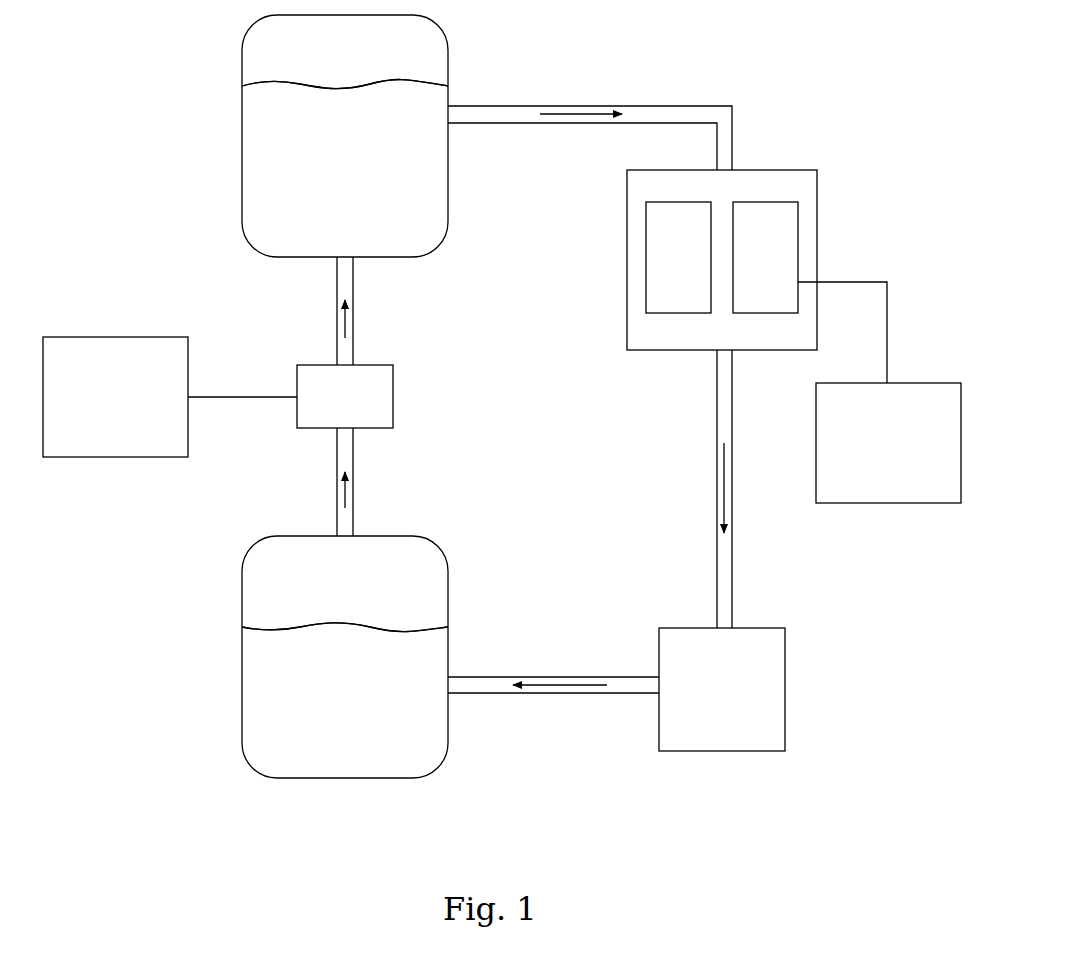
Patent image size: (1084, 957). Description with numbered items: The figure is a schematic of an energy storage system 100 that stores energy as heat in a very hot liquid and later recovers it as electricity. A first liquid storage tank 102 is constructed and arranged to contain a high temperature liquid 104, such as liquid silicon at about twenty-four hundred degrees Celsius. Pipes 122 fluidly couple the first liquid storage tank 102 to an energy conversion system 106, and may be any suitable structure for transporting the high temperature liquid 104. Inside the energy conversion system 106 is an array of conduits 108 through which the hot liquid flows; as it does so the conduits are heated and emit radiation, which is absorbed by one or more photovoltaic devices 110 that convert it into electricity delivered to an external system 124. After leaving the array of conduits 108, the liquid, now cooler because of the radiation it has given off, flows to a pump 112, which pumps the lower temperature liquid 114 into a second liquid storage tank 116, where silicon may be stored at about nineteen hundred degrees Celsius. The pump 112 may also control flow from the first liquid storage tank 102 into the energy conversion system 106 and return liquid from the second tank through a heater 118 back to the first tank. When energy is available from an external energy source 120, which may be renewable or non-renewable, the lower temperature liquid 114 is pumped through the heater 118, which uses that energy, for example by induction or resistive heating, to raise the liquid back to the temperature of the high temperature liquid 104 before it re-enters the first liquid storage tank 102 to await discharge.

The energy storage system 100 is at (152, 75).
The first liquid storage tank 102 is at (448, 56).
The high temperature liquid 104 is at (364, 169).
The energy conversion system 106 is at (633, 290).
The array of conduits 108 is at (646, 243).
The photovoltaic devices 110 is at (798, 255).
The pump 112 is at (785, 678).
The lower temperature liquid 114 is at (364, 702).
The second liquid storage tank 116 is at (242, 607).
The heater 118 is at (393, 397).
The external energy source 120 is at (134, 407).
The pipes 122 is at (732, 122).
The external system 124 is at (906, 457).